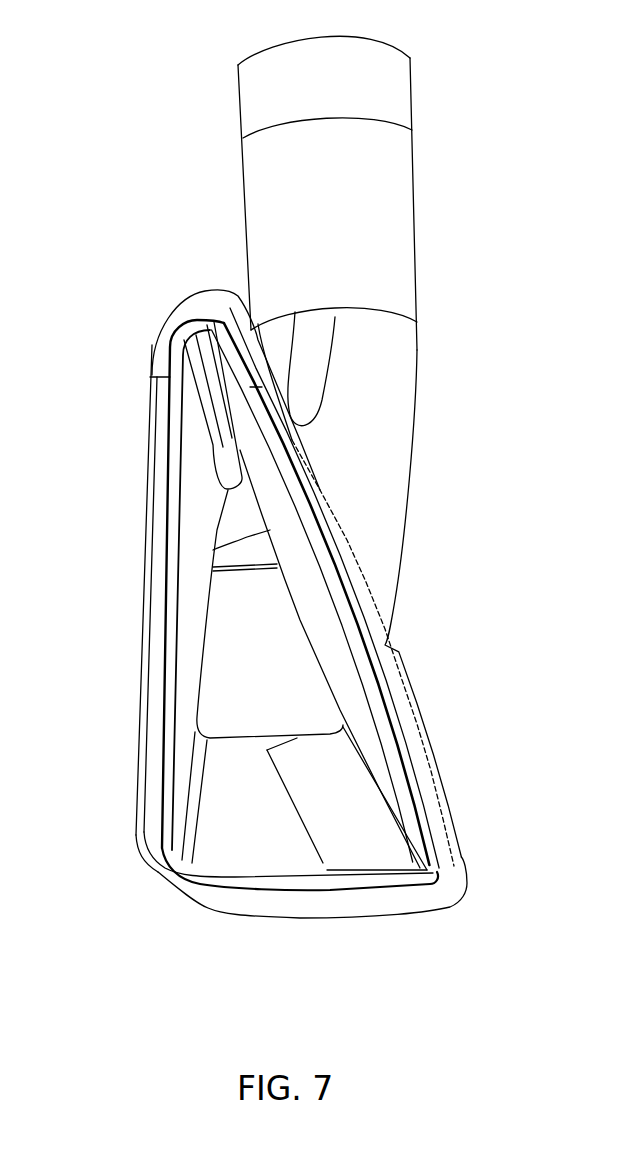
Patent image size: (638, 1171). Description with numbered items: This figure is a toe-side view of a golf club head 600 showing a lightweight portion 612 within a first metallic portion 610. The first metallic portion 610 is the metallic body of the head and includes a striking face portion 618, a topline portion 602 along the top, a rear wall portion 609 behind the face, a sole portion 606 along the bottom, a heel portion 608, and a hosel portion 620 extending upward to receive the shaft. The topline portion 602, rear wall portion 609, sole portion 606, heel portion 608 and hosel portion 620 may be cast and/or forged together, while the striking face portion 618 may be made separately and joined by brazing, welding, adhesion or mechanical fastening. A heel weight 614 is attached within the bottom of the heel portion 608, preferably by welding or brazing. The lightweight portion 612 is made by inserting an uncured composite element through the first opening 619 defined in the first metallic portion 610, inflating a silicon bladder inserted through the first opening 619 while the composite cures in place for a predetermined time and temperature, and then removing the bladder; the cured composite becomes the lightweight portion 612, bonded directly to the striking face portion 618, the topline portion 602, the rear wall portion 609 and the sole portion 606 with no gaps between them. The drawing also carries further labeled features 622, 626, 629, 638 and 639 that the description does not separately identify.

The golf club head 600 is at (566, 55).
The hosel portion 620 is at (243, 140).
The heel portion 608 is at (387, 605).
The topline portion 602 is at (168, 312).
The first metallic portion 610 is at (122, 334).
The lightweight portion 612 is at (182, 509).
The inner wall edge 629 is at (178, 578).
The rear wall portion 609 is at (152, 648).
The hosel bore 622 is at (188, 335).
The top edge of face 638 is at (300, 505).
The striking face portion 618 is at (352, 583).
The heel weight 614 is at (262, 698).
The lower corner 639 is at (157, 852).
The first opening 619 is at (176, 880).
The sole rail 626 is at (370, 887).
The sole portion 606 is at (248, 913).